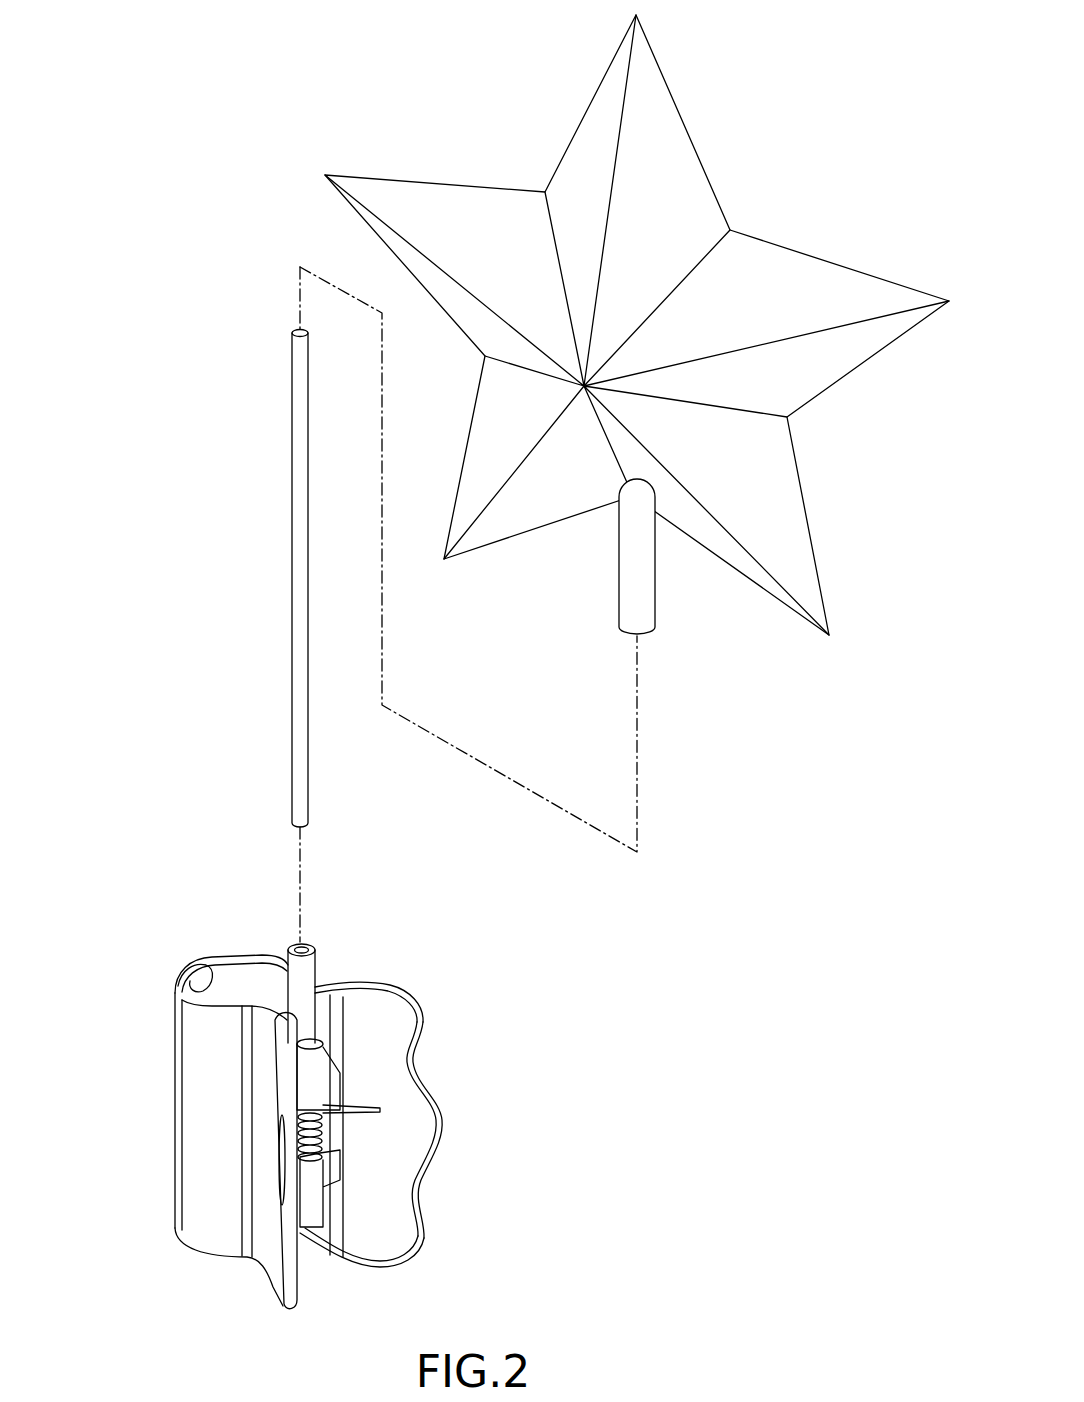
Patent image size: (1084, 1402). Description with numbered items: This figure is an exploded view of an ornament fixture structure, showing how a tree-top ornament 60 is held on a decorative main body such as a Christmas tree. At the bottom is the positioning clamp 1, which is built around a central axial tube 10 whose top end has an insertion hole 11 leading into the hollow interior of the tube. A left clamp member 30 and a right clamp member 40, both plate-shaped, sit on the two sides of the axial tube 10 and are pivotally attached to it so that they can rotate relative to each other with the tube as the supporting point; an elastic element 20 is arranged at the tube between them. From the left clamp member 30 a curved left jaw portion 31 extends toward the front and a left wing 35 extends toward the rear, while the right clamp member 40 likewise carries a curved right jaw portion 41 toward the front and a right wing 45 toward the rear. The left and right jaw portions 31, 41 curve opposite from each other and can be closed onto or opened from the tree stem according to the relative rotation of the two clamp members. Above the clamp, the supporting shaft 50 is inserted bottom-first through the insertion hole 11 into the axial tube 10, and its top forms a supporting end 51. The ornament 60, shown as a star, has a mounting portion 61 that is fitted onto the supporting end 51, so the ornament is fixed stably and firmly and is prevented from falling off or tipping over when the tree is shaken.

The positioning clamp 1 is at (112, 1073).
The axial tube 10 is at (307, 960).
The insertion hole 11 is at (297, 943).
The elastic element 20 is at (323, 1138).
The left clamp member 30 is at (258, 1230).
The left jaw portion 31 is at (187, 1150).
The left wing 35 is at (285, 1307).
The right clamp member 40 is at (335, 995).
The right jaw portion 41 is at (235, 982).
The right wing 45 is at (400, 1065).
The supporting shaft 50 is at (305, 641).
The supporting end 51 is at (296, 336).
The ornament 60 is at (803, 272).
The mounting portion 61 is at (631, 601).